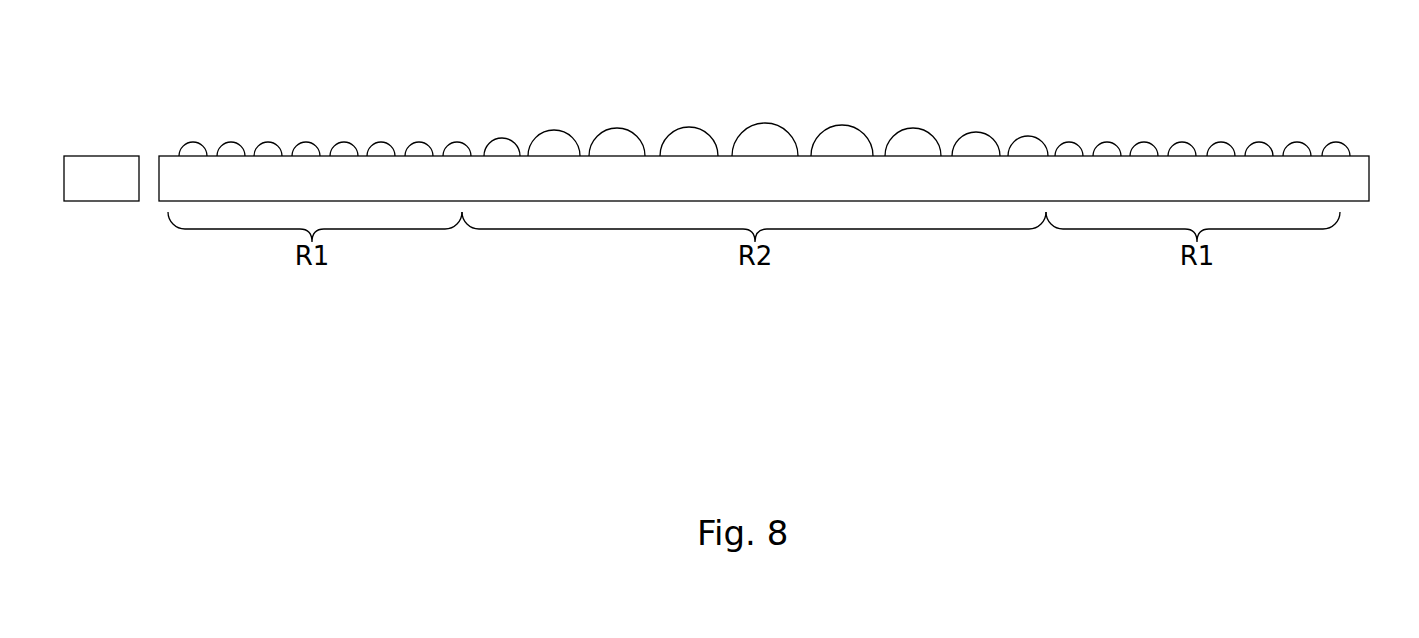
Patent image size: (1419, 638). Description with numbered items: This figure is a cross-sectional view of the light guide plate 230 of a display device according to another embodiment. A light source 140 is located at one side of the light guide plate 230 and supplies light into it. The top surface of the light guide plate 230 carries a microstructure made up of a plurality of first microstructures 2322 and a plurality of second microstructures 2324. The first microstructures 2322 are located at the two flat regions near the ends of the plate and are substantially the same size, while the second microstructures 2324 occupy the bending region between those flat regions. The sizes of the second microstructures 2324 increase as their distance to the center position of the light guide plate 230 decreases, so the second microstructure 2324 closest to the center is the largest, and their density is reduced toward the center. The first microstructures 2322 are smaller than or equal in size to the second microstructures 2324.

The light source 140 is at (88, 172).
The light guide plate 230 is at (1350, 183).
The first microstructures 2322 is at (412, 148).
The second microstructures 2324 is at (760, 152).